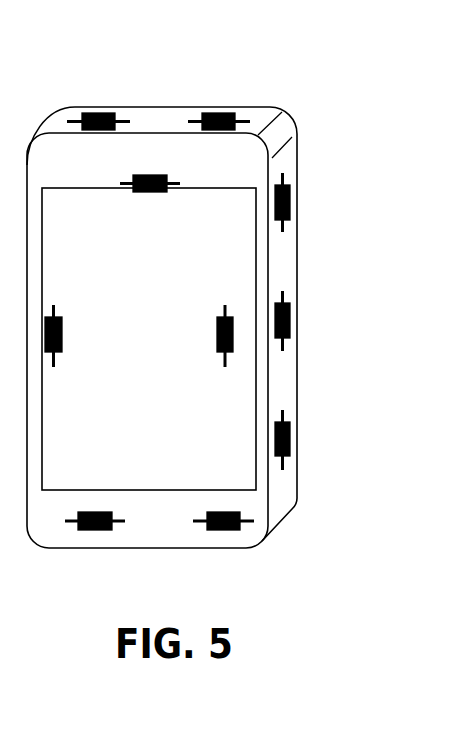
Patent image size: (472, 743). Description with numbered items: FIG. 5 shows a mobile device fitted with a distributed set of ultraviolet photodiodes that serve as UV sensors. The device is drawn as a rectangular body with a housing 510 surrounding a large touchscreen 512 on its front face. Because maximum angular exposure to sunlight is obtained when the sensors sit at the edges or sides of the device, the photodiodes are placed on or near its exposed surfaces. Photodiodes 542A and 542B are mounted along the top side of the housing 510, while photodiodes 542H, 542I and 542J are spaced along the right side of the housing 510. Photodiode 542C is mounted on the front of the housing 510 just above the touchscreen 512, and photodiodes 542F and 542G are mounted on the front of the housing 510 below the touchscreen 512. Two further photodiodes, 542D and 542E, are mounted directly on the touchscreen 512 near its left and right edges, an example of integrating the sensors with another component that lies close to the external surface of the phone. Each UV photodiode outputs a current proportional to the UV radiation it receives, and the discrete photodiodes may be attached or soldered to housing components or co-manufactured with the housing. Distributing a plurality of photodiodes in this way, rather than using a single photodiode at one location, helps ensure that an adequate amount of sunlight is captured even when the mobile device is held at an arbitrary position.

The housing 510 is at (282, 258).
The touchscreen 512 is at (237, 390).
The photodiode 542A is at (97, 112).
The photodiode 542B is at (220, 112).
The photodiode 542C is at (155, 175).
The photodiode 542D is at (62, 333).
The photodiode 542E is at (217, 333).
The photodiode 542F is at (92, 530).
The photodiode 542G is at (217, 530).
The photodiode 542H is at (290, 200).
The photodiode 542I is at (290, 318).
The photodiode 542J is at (290, 440).